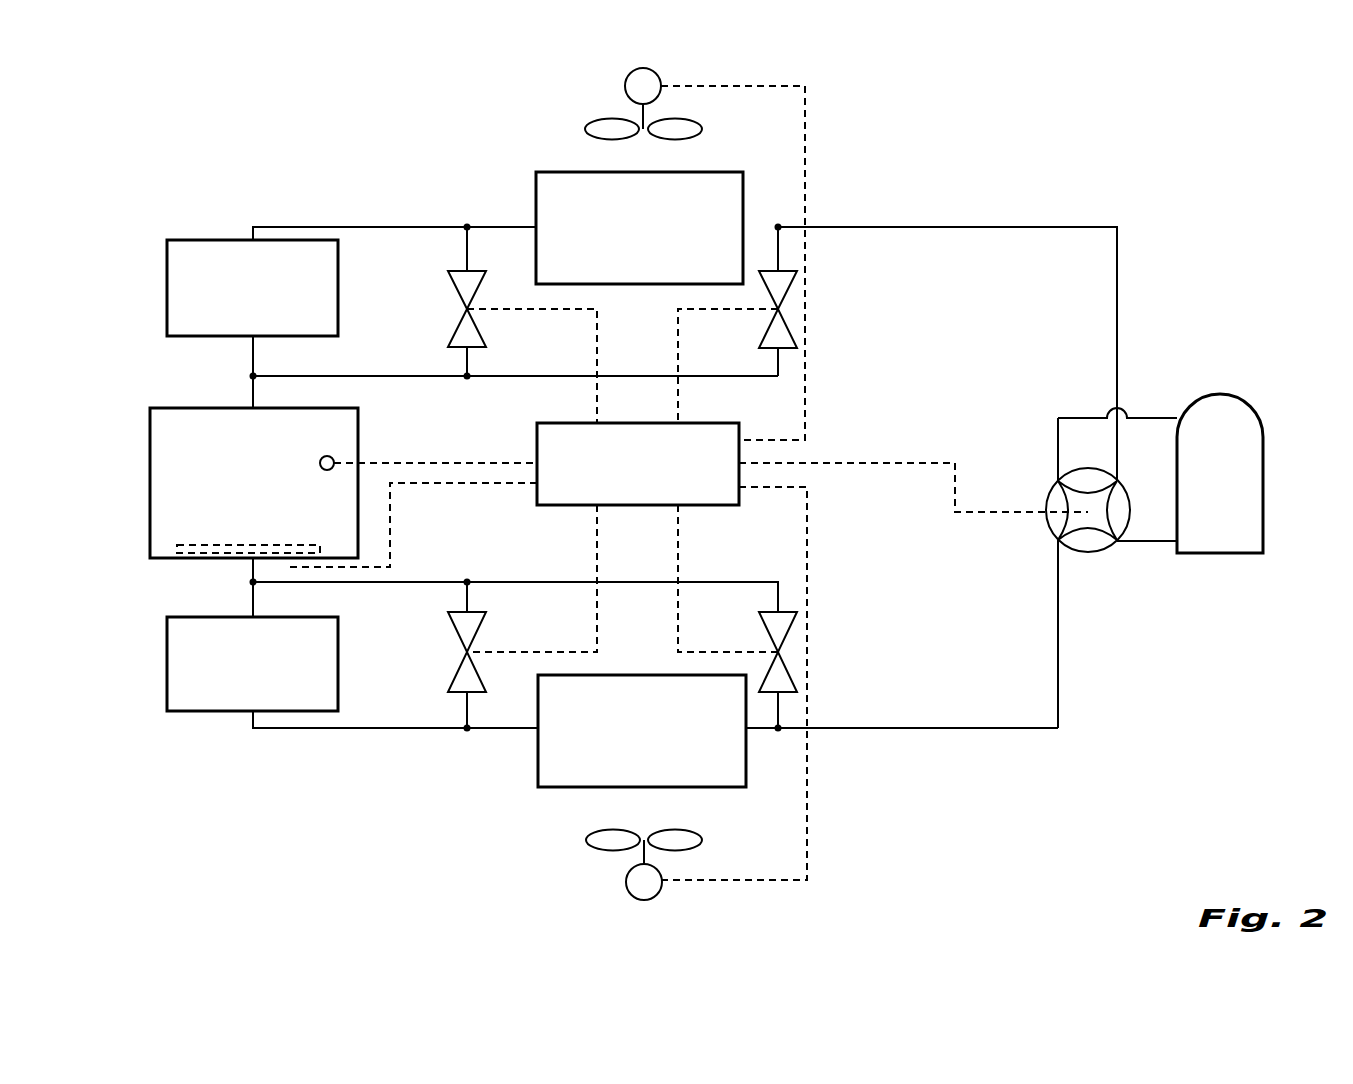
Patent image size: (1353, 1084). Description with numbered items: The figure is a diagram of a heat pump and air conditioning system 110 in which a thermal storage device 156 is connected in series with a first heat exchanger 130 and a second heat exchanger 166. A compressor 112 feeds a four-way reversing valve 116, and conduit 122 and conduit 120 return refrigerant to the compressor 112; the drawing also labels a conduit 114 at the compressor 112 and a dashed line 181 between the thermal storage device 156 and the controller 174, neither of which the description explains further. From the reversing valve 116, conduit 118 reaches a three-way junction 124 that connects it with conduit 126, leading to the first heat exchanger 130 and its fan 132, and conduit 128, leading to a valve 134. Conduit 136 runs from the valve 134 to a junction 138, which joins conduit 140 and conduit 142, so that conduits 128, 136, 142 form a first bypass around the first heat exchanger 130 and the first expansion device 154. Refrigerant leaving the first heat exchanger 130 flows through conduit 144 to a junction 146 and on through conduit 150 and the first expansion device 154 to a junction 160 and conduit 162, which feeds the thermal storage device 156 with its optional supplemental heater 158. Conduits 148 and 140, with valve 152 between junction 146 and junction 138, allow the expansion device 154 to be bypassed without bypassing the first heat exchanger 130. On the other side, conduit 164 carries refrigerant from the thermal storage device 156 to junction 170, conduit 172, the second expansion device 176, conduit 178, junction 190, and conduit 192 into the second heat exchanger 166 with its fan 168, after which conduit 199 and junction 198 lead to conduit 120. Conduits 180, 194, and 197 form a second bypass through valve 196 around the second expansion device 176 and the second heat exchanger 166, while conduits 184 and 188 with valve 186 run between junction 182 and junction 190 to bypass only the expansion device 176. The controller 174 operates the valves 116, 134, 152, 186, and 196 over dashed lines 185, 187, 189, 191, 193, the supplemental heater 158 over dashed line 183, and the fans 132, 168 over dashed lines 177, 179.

The heat pump and air conditioning system 110 is at (1058, 200).
The compressor 112 is at (1220, 553).
The discharge line 114 is at (1085, 418).
The four-way reversing valve 116 is at (1083, 556).
The conduit 118 is at (1118, 277).
The conduit 120 is at (1058, 666).
The conduit 122 is at (1147, 541).
The three-way junction 124 is at (781, 228).
The conduit 126 is at (778, 226).
The conduit 128 is at (785, 271).
The first heat exchanger 130 is at (740, 172).
The fan 132 is at (584, 106).
The valve 134 is at (770, 325).
The conduit 136 is at (620, 376).
The junction 138 is at (468, 378).
The conduit 140 is at (467, 354).
The conduit 142 is at (398, 378).
The conduit 144 is at (510, 226).
The junction 146 is at (466, 226).
The conduit 148 is at (467, 252).
The conduit 150 is at (282, 227).
The valve 152 is at (464, 308).
The first expansion device 154 is at (338, 296).
The thermal storage device 156 is at (358, 444).
The supplemental heater 158 is at (253, 344).
The junction 160 is at (252, 376).
The conduit 162 is at (253, 402).
The conduit 164 is at (253, 570).
The second heat exchanger 166 is at (746, 787).
The fan 168 is at (618, 872).
The junction 170 is at (253, 590).
The conduit 172 is at (254, 600).
The controller 174 is at (720, 506).
The second expansion device 176 is at (338, 680).
The dashed line 177 is at (805, 160).
The conduit 178 is at (302, 729).
The dashed line 179 is at (808, 556).
The conduit 180 is at (420, 582).
The temperature sensor line 181 is at (446, 463).
The junction 182 is at (470, 582).
The dashed line 183 is at (392, 505).
The conduit 184 is at (470, 600).
The dashed line 185 is at (872, 465).
The valve 186 is at (464, 668).
The dashed line 187 is at (678, 356).
The conduit 188 is at (468, 712).
The dashed line 189 is at (597, 335).
The junction 190 is at (466, 730).
The dashed line 191 is at (596, 544).
The conduit 192 is at (512, 729).
The dashed line 193 is at (679, 550).
The conduit 194 is at (660, 582).
The valve 196 is at (790, 650).
The conduit 197 is at (780, 706).
The junction 198 is at (790, 736).
The conduit 199 is at (762, 729).